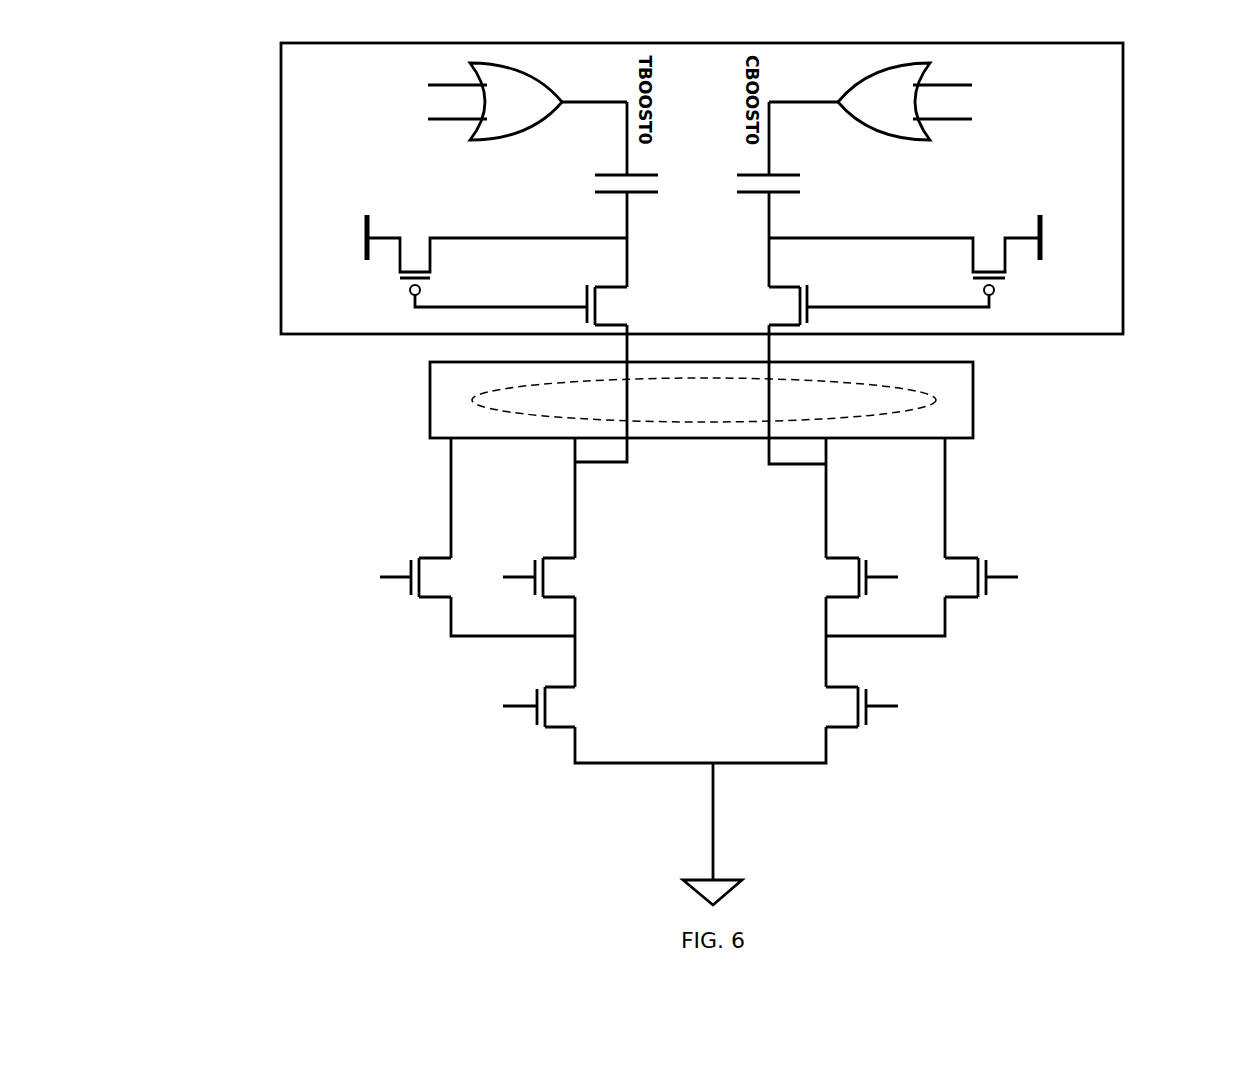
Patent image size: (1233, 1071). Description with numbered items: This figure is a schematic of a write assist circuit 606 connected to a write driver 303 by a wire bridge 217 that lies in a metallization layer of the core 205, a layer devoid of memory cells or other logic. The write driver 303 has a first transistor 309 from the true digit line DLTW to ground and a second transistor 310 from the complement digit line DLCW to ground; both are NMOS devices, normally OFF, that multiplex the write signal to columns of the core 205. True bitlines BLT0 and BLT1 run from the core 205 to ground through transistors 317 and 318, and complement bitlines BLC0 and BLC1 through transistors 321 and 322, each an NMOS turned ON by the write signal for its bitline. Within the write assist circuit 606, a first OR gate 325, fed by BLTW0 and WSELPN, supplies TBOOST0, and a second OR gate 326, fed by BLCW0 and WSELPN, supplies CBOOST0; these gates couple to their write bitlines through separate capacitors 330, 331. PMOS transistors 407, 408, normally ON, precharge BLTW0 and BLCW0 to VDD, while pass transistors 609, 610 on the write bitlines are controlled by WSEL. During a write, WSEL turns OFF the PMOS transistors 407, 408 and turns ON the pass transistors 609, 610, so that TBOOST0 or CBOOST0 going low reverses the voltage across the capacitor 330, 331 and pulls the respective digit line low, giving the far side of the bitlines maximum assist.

The write assist circuit 606 is at (1123, 188).
The first OR gate 325 is at (522, 137).
The second OR gate 326 is at (882, 137).
The capacitor 330 is at (657, 182).
The capacitor 331 is at (733, 182).
The PMOS transistor 407 is at (415, 237).
The PMOS transistor 408 is at (988, 237).
The pass transistor 609 is at (625, 305).
The pass transistor 610 is at (770, 307).
The core 205 is at (973, 400).
The wire bridge 217 is at (473, 400).
The write driver 303 is at (584, 671).
The transistor 317 is at (528, 570).
The transistor 318 is at (403, 570).
The transistor 321 is at (877, 570).
The transistor 322 is at (993, 570).
The first transistor 309 is at (577, 707).
The second transistor 310 is at (825, 707).